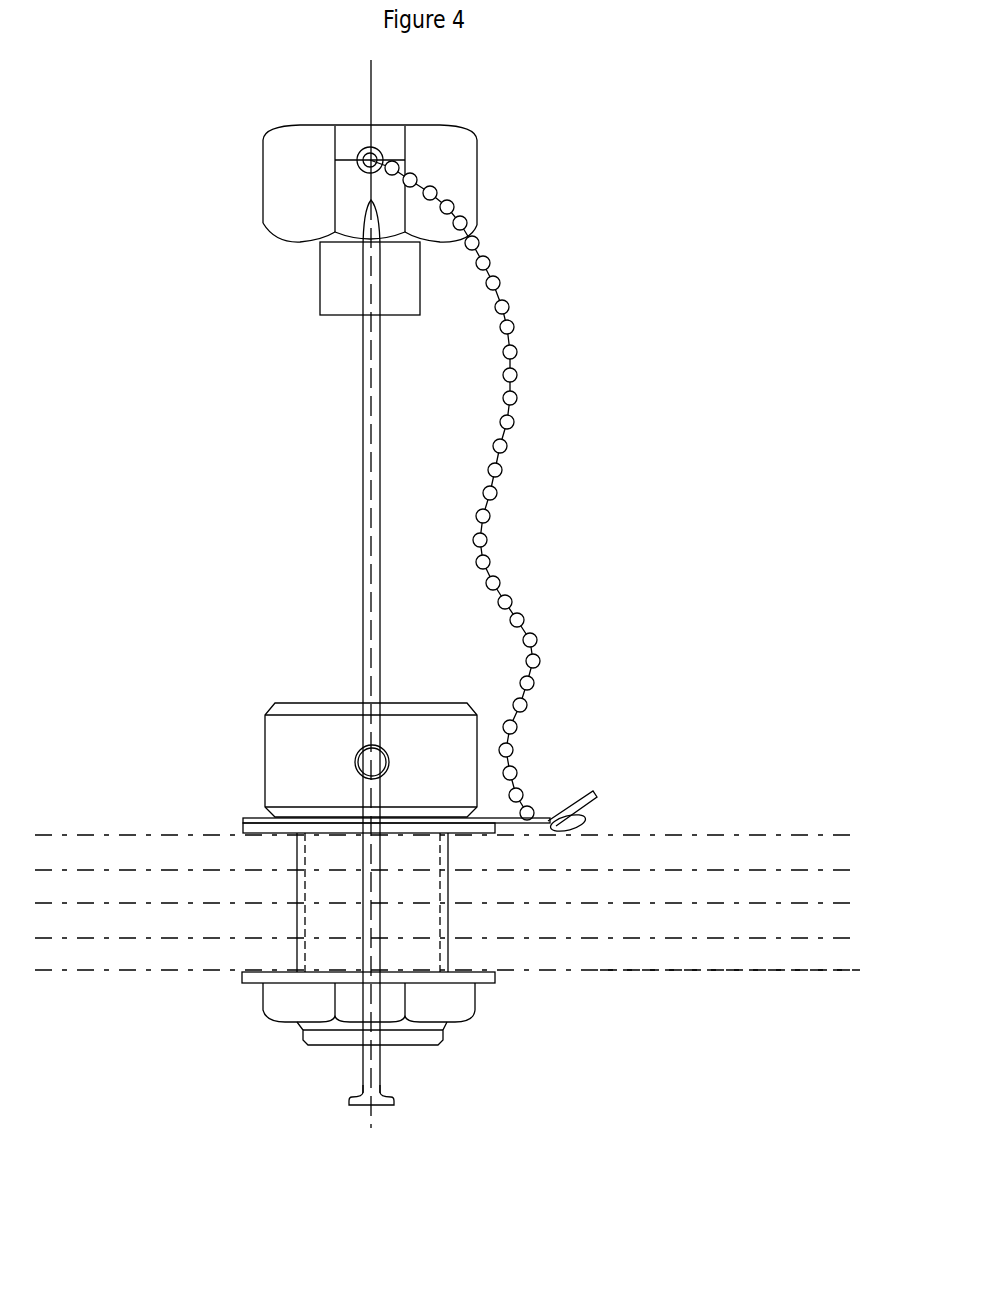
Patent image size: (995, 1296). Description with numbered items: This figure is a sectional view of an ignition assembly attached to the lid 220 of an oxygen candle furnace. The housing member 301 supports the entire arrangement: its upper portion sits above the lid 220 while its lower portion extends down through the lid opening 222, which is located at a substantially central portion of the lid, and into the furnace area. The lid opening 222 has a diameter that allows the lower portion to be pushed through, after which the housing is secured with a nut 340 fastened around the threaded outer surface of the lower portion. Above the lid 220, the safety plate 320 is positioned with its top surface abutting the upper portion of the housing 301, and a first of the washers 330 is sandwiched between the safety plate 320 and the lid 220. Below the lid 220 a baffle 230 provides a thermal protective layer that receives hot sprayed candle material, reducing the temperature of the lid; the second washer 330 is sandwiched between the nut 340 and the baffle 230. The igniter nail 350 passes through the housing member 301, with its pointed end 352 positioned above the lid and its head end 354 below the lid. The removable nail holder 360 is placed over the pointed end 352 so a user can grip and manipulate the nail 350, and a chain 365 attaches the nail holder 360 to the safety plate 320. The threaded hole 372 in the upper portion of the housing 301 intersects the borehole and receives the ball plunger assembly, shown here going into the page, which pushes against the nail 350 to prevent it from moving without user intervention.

The housing member 301 is at (455, 749).
The safety plate 320 is at (582, 797).
The washers 330 is at (243, 975).
The nut 340 is at (268, 1017).
The igniter nail 350 is at (362, 500).
The pointed end 352 is at (360, 238).
The head end 354 is at (385, 1105).
The removable nail holder 360 is at (263, 165).
The chain 365 is at (516, 350).
The threaded hole 372 is at (355, 762).
The lid 220 is at (862, 835).
The lid opening 222 is at (448, 938).
The baffle 230 is at (637, 970).